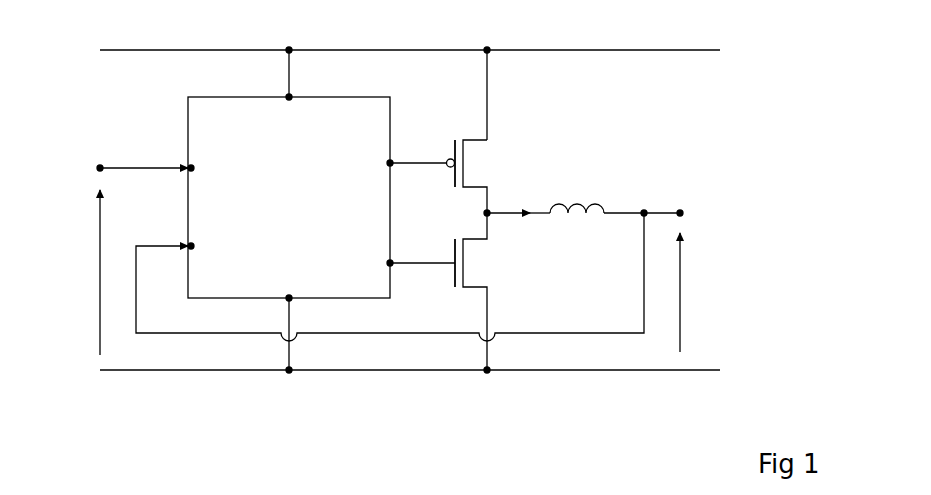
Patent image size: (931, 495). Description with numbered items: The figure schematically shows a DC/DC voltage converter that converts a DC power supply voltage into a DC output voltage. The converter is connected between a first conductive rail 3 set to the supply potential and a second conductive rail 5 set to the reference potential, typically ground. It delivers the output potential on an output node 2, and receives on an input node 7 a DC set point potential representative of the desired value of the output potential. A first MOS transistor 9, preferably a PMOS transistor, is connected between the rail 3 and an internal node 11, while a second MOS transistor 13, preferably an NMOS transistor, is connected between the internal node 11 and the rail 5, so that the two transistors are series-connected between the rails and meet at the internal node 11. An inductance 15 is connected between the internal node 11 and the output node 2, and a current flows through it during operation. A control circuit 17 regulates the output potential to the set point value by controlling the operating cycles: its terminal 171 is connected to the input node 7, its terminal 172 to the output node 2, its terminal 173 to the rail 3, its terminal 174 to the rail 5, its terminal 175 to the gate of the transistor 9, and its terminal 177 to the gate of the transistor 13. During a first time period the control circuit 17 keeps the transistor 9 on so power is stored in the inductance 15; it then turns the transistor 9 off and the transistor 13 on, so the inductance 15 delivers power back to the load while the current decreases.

The output node 2 is at (683, 210).
The first conductive rail 3 is at (672, 50).
The second conductive rail 5 is at (688, 372).
The input node 7 is at (100, 166).
The first MOS transistor 9 is at (473, 158).
The internal node 11 is at (490, 210).
The second MOS transistor 13 is at (473, 268).
The inductance 15 is at (575, 204).
The control circuit 17 is at (390, 210).
The terminal 171 is at (197, 168).
The terminal 172 is at (197, 246).
The terminal 173 is at (289, 100).
The terminal 174 is at (289, 295).
The terminal 175 is at (388, 163).
The terminal 177 is at (388, 263).